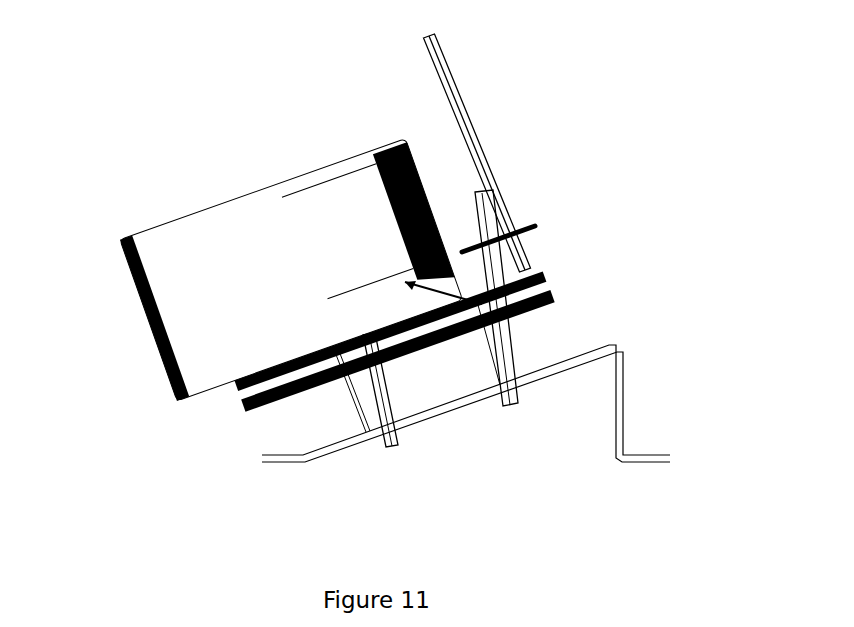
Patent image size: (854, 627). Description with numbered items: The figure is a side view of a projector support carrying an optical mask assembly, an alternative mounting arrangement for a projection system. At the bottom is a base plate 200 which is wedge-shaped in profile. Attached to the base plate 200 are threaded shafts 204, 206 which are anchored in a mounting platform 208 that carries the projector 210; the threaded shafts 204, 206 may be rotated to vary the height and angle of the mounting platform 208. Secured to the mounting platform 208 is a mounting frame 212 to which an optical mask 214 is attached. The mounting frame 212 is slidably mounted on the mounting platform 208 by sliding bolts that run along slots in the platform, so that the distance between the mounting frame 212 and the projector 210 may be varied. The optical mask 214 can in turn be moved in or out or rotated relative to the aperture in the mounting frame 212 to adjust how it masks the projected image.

The base plate 200 is at (628, 453).
The threaded shaft 204 is at (513, 403).
The threaded shaft 206 is at (381, 403).
The mounting platform 208 is at (250, 393).
The projector 210 is at (230, 218).
The mounting frame 212 is at (517, 252).
The optical mask 214 is at (480, 138).